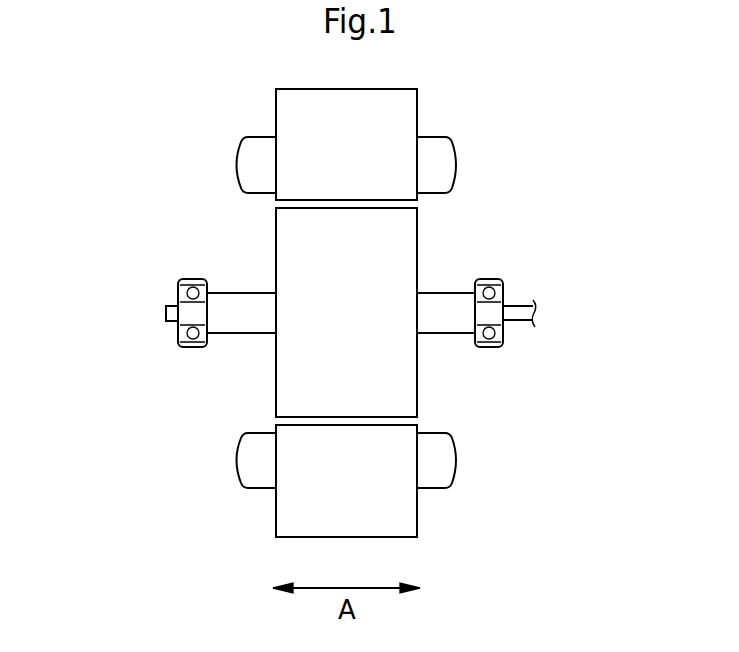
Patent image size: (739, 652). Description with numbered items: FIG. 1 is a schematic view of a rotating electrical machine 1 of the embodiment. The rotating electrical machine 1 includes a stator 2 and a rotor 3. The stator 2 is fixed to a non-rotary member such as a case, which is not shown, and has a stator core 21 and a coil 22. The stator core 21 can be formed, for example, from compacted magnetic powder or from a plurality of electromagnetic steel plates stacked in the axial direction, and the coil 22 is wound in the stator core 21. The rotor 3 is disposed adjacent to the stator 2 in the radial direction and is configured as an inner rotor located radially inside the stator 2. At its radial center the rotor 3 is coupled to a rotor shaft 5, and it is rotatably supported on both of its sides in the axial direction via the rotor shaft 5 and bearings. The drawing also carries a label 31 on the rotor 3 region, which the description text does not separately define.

The rotating electrical machine 1 is at (158, 88).
The stator 2 is at (223, 165).
The stator core 21 is at (382, 89).
The coil 22 is at (457, 152).
The rotor 3 is at (220, 389).
The second stator 31 is at (417, 376).
The rotor shaft 5 is at (457, 292).